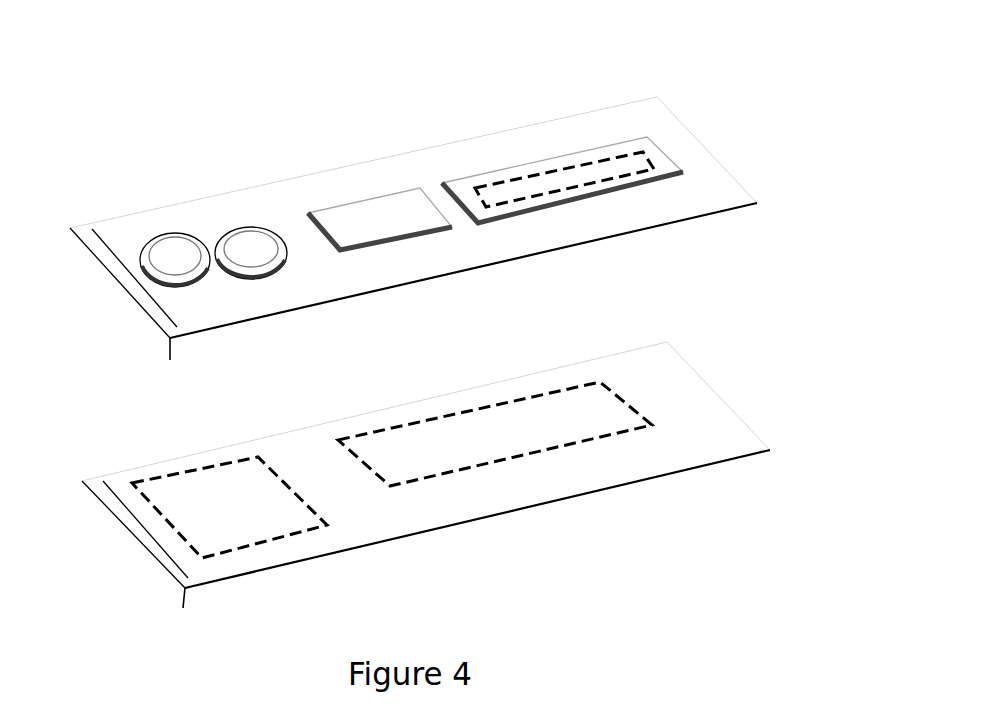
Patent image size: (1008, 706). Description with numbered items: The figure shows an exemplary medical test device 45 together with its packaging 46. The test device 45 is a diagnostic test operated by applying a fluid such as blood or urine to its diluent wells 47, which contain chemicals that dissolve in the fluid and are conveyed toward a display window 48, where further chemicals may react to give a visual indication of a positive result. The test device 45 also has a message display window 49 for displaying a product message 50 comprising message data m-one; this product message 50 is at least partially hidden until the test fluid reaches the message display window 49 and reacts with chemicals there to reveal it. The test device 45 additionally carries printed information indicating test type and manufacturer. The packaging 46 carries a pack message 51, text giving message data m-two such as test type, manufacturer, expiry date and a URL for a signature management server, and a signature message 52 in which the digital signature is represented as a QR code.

The medical test device 45 is at (712, 157).
The packaging 46 is at (722, 400).
The diluent wells 47 is at (230, 233).
The display window 48 is at (330, 208).
The message display window 49 is at (457, 178).
The product message 50 is at (639, 163).
The pack message 51 is at (265, 473).
The signature message 52 is at (612, 389).